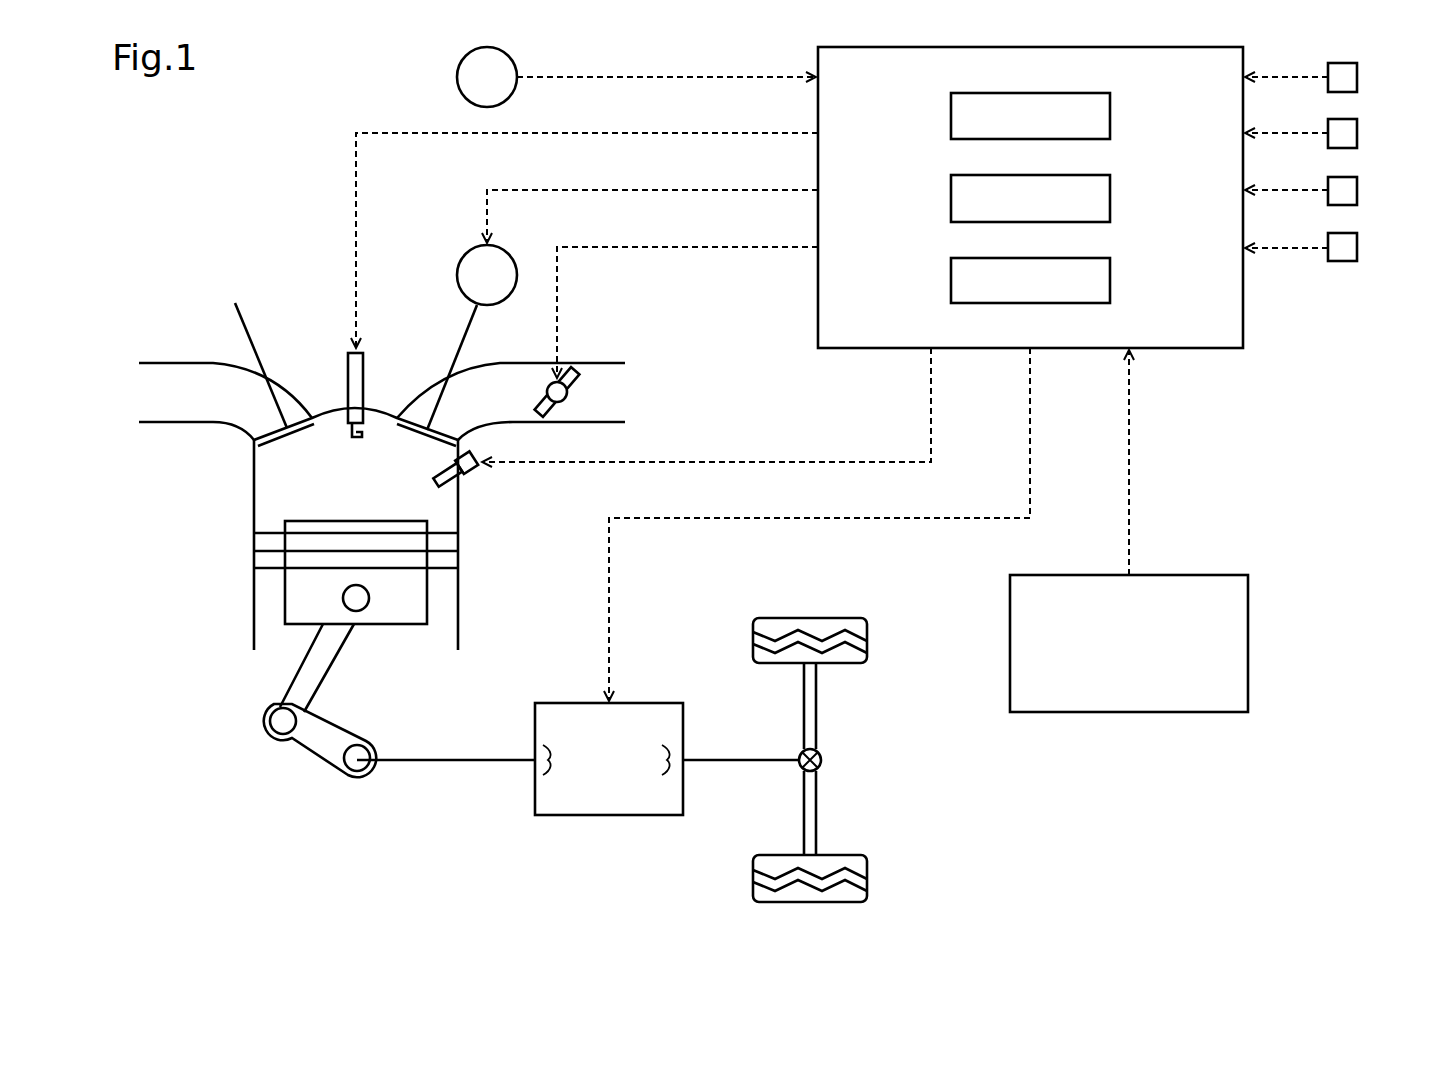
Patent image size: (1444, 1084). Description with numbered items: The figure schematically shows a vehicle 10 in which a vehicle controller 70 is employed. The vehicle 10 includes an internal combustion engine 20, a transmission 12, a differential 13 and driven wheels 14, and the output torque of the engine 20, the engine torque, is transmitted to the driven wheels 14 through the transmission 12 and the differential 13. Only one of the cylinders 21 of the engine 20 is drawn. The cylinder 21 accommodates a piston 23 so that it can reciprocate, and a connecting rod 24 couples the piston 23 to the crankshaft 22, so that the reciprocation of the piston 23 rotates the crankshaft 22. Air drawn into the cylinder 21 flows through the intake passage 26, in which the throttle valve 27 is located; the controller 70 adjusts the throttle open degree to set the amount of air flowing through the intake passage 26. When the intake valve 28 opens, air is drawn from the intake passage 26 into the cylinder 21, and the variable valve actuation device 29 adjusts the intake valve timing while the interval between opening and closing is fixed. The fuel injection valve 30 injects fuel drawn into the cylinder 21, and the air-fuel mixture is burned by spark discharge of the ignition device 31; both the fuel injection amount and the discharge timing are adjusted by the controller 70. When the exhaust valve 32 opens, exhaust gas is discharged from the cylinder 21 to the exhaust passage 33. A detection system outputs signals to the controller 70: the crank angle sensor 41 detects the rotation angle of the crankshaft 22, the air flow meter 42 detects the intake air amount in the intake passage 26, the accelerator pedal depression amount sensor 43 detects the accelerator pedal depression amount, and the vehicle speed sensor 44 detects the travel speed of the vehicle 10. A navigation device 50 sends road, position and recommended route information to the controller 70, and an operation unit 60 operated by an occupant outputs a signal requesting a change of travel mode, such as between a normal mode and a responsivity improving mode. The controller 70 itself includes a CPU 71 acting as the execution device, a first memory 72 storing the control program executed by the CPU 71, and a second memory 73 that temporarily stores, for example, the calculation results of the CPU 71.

The vehicle 10 is at (947, 828).
The transmission 12 is at (608, 815).
The differential 13 is at (822, 760).
The driven wheels 14 is at (837, 618).
The internal combustion engine 20 is at (220, 628).
The cylinder 21 is at (458, 580).
The crankshaft 22 is at (357, 752).
The piston 23 is at (427, 608).
The connecting rod 24 is at (328, 663).
The intake passage 26 is at (553, 423).
The throttle valve 27 is at (567, 403).
The intake valve 28 is at (440, 440).
The variable valve actuation device 29 is at (458, 270).
The fuel injection valve 30 is at (463, 477).
The ignition device 31 is at (365, 368).
The exhaust valve 32 is at (270, 440).
The exhaust passage 33 is at (163, 423).
The crank angle sensor 41 is at (1357, 77).
The air flow meter 42 is at (1357, 133).
The accelerator pedal depression amount sensor 43 is at (1357, 190).
The vehicle speed sensor 44 is at (1357, 248).
The navigation device 50 is at (1065, 712).
The operation unit 60 is at (457, 73).
The controller 70 is at (834, 374).
The CPU 71 is at (1067, 92).
The first memory 72 is at (1067, 175).
The second memory 73 is at (1067, 258).